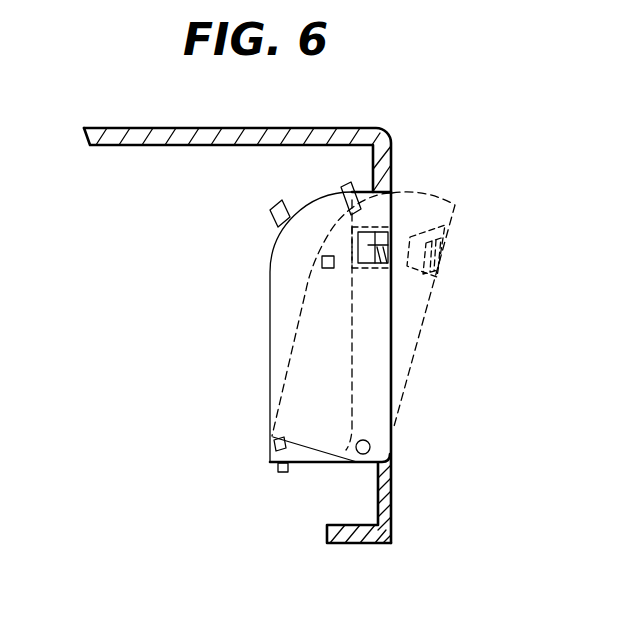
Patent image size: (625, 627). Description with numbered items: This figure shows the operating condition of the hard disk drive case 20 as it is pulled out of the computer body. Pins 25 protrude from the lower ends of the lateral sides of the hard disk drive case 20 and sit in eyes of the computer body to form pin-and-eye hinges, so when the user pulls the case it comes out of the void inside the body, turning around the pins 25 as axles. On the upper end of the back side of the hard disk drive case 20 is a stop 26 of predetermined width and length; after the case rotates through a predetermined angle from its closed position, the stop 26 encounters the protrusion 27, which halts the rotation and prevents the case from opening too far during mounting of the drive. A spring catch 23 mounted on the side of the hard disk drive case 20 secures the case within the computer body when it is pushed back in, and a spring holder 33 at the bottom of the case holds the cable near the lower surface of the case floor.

The hard disk drive case 20 is at (287, 310).
The spring catch 23 is at (390, 240).
The pin 25 is at (370, 446).
The stop 26 is at (275, 208).
The protrusion 27 is at (392, 160).
The spring holder 33 is at (275, 468).